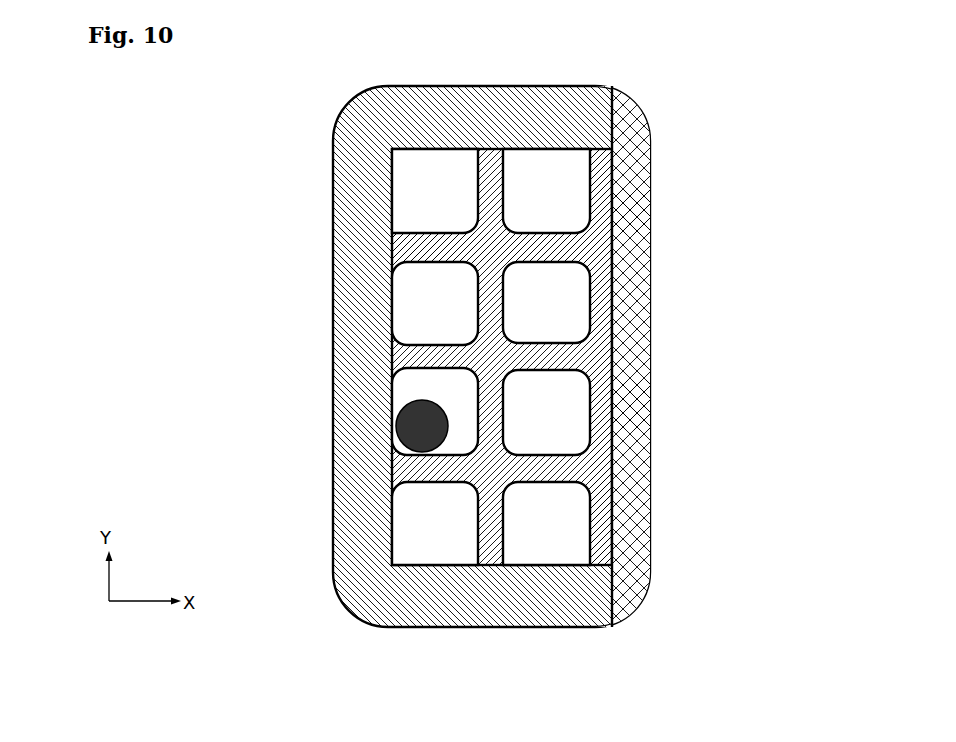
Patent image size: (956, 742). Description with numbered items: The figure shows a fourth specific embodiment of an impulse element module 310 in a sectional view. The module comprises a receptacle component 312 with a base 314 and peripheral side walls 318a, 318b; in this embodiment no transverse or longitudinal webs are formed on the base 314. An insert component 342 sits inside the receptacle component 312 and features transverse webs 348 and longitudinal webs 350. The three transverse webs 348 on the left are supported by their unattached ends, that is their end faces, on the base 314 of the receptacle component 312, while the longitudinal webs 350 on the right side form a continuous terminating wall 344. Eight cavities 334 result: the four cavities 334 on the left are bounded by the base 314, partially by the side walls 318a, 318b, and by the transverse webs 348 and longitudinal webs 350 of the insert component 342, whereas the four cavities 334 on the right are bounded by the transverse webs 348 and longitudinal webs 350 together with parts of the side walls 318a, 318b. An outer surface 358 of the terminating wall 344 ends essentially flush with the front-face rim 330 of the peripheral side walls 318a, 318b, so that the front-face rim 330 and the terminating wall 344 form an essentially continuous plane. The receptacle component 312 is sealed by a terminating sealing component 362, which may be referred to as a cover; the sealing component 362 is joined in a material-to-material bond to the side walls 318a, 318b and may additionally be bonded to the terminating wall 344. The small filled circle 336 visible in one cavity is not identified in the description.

The impulse element module 310 is at (464, 343).
The receptacle component 312 is at (340, 238).
The base 314 is at (357, 298).
The side wall 318a is at (484, 110).
The side wall 318b is at (488, 597).
The front-face rim 330 is at (622, 124).
The cavities 334 is at (452, 194).
The fill port 336 is at (397, 426).
The insert component 342 is at (586, 352).
The terminating wall 344 is at (600, 316).
The transverse webs 348 is at (550, 247).
The longitudinal webs 350 is at (603, 527).
The outer surface 358 is at (624, 404).
The sealing component 362 is at (655, 212).